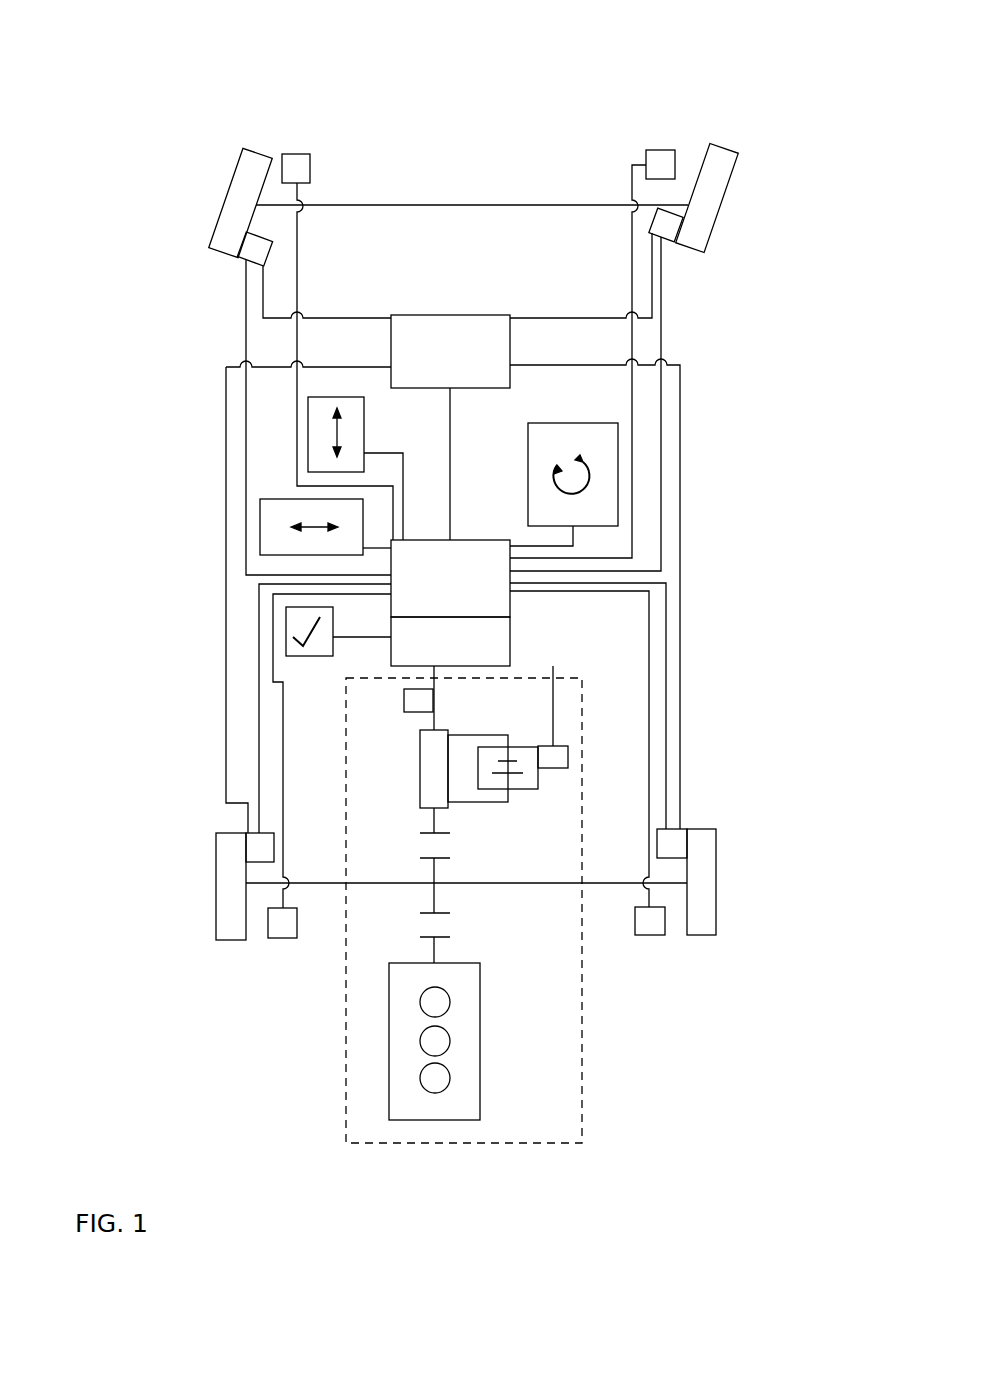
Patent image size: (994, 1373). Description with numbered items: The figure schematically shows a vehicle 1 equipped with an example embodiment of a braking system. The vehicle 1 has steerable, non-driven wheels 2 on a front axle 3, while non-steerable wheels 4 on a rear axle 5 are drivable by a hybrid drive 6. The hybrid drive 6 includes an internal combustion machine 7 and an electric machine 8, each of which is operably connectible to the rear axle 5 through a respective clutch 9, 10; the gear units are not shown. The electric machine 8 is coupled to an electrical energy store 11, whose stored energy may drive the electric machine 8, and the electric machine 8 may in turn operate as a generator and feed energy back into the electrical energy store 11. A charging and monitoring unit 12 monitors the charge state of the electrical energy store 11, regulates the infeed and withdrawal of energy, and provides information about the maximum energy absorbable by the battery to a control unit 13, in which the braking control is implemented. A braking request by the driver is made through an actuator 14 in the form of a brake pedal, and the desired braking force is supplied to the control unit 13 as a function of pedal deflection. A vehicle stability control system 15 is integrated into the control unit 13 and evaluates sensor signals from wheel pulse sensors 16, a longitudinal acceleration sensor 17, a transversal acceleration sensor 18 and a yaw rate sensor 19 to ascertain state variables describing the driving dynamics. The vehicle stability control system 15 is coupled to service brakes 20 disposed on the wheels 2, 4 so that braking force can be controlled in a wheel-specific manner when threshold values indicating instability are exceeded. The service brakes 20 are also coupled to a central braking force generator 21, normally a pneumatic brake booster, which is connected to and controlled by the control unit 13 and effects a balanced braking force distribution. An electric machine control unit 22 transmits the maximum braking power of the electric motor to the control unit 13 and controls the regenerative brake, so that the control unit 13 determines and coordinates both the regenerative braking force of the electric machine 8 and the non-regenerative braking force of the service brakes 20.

The vehicle 1 is at (754, 80).
The steerable, non-driven wheels 2 is at (229, 215).
The front axle 3 is at (470, 205).
The non-steerable wheels 4 is at (229, 925).
The rear axle 5 is at (323, 883).
The hybrid drive 6 is at (582, 1057).
The internal combustion machine 7 is at (404, 1075).
The electric machine 8 is at (428, 752).
The clutch 9 is at (439, 925).
The clutch 10 is at (439, 846).
The electrical energy store 11 is at (528, 782).
The charging and monitoring unit 12 is at (559, 757).
The control unit 13 is at (489, 641).
The actuator 14 is at (292, 620).
The vehicle stability control system 15 is at (492, 587).
The wheel pulse sensors 16 is at (297, 163).
The longitudinal acceleration sensor 17 is at (318, 443).
The transversal acceleration sensor 18 is at (269, 527).
The yaw rate sensor 19 is at (606, 490).
The service brakes 20 is at (249, 250).
The central braking force generator 21 is at (483, 320).
The electric machine control unit 22 is at (412, 702).